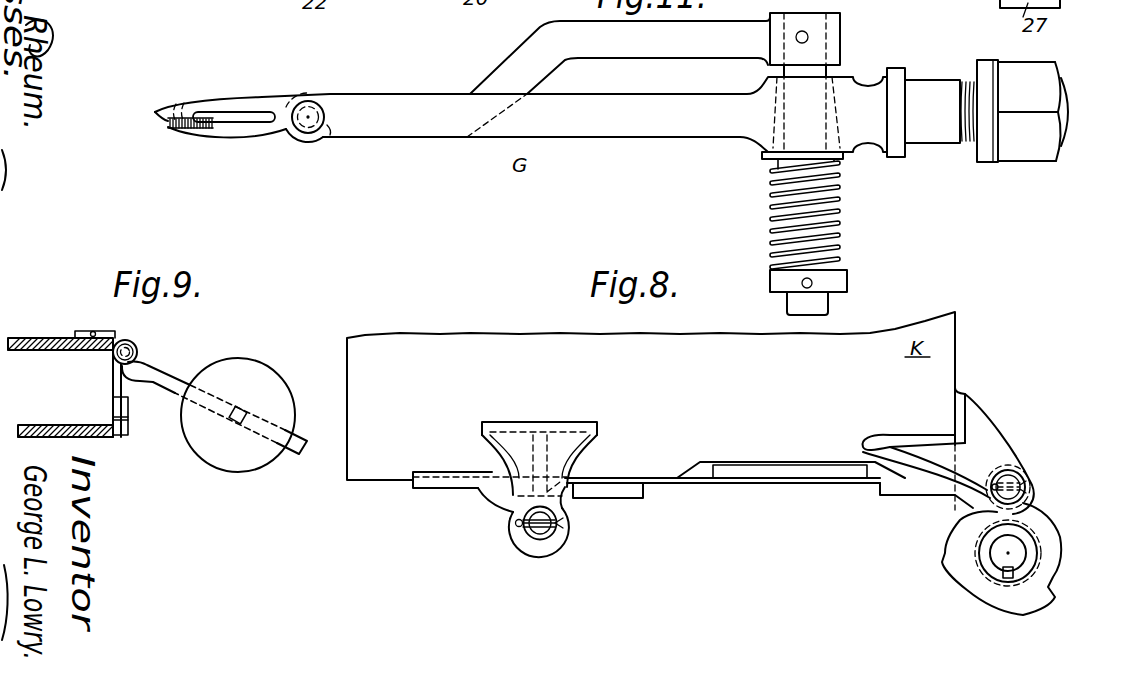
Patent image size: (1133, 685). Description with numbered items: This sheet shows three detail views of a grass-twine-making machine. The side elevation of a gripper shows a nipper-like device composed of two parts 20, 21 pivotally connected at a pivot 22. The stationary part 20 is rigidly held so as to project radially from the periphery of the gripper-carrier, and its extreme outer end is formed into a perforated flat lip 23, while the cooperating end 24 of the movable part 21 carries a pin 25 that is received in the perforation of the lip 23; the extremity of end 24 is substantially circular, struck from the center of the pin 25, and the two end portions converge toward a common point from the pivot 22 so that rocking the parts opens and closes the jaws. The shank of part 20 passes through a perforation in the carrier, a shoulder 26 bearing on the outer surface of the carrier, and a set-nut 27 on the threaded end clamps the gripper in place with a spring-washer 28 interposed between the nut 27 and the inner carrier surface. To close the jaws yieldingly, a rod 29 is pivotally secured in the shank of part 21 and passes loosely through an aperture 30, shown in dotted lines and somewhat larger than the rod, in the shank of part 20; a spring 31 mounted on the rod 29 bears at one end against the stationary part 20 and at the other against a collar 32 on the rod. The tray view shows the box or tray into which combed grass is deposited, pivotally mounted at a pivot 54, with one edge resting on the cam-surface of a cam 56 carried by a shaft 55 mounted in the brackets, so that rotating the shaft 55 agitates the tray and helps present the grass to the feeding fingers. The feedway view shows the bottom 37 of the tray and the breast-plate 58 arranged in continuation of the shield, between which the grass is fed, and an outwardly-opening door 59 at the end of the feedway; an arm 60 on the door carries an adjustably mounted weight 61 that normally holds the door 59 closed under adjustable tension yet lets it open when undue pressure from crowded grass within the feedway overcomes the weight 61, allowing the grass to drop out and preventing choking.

In FIG. 11, the gripper part 20 is at (618, 135).
In FIG. 11, the gripper part 21 is at (567, 27).
In FIG. 11, the pivot 22 is at (311, 115).
In FIG. 11, the flat lip 23 is at (210, 105).
In FIG. 11, the cooperating end 24 is at (206, 129).
In FIG. 11, the pin 25 is at (176, 108).
In FIG. 11, the shoulder 26 is at (897, 70).
In FIG. 11, the set-nut 27 is at (1049, 64).
In FIG. 11, the spring-washer 28 is at (985, 62).
In FIG. 11, the rod 29 is at (829, 306).
In FIG. 11, the aperture 30 is at (776, 148).
In FIG. 11, the spring 31 is at (840, 226).
In FIG. 11, the collar 32 is at (846, 279).
In FIG. 9, the bottom of the tray 37 is at (50, 428).
In FIG. 8, the pivot 54 is at (532, 538).
In FIG. 8, the shaft 55 is at (1020, 553).
In FIG. 8, the cam 56 is at (947, 553).
In FIG. 9, the breast-plate 58 is at (42, 338).
In FIG. 9, the door 59 is at (115, 376).
In FIG. 9, the arm 60 is at (172, 378).
In FIG. 9, the weight 61 is at (265, 378).